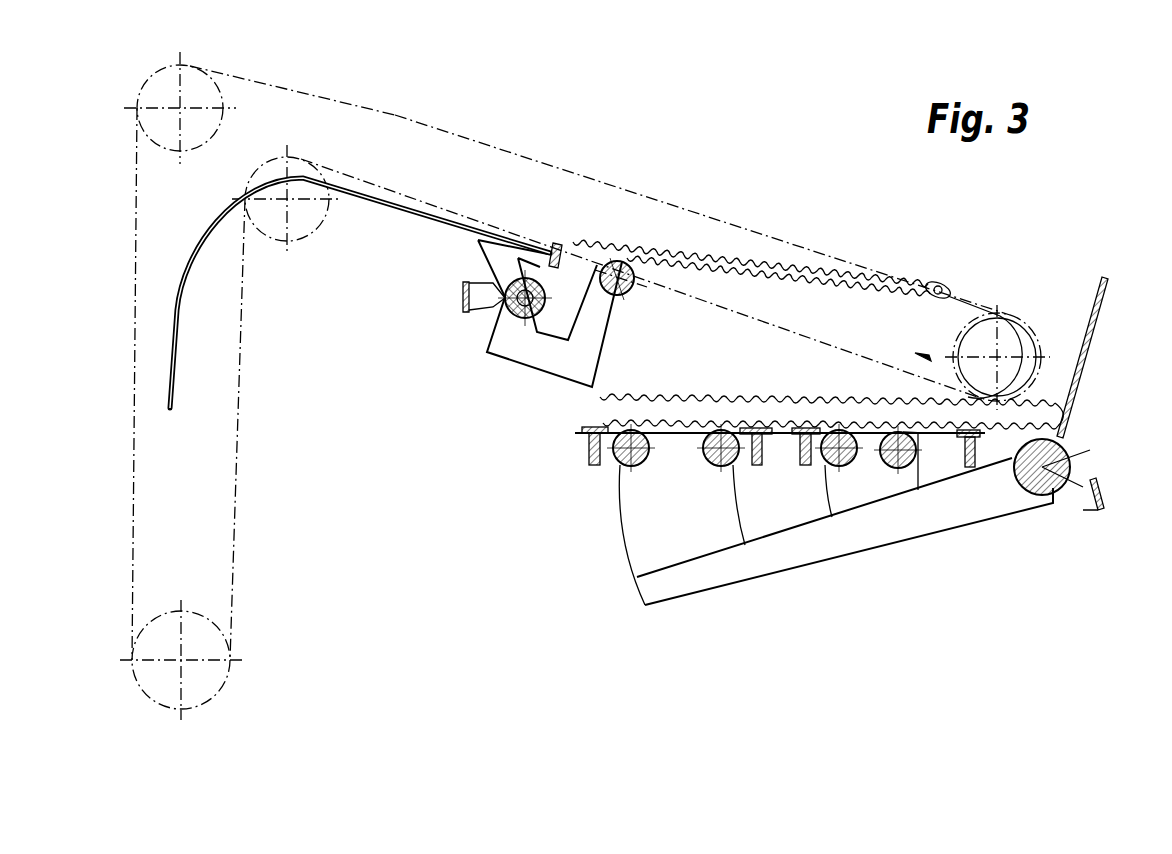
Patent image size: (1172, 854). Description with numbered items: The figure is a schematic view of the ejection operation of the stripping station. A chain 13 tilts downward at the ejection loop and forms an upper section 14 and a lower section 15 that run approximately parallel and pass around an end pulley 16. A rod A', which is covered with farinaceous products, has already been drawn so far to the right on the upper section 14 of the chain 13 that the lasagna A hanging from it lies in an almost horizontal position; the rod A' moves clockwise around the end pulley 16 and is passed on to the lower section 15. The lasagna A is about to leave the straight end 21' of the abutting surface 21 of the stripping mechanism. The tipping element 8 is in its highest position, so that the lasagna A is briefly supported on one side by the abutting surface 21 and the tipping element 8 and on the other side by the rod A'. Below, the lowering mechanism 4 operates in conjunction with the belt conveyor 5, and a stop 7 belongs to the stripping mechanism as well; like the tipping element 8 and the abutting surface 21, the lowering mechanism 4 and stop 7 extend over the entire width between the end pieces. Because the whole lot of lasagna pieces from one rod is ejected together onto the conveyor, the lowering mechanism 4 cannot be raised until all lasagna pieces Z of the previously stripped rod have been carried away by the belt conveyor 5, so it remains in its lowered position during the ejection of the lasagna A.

The chain 13 is at (380, 110).
The upper section 14 is at (740, 223).
The lower section 15 is at (747, 310).
The end pulley 16 is at (1033, 333).
The lasagna A is at (797, 307).
The rod A' is at (957, 262).
The lasagna pieces Z is at (643, 397).
The stop 7 is at (1087, 370).
The tipping element 8 is at (537, 360).
The abutting surface 21 is at (360, 288).
The straight end 21' is at (459, 306).
The belt conveyor 5 is at (585, 453).
The lowering mechanism 4 is at (678, 547).